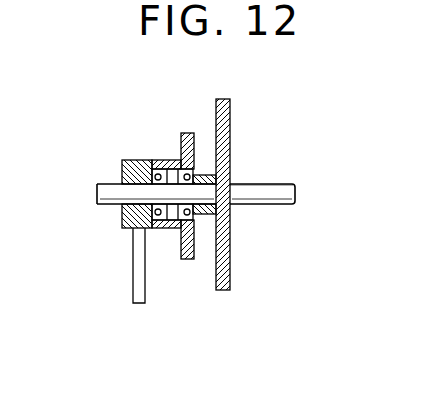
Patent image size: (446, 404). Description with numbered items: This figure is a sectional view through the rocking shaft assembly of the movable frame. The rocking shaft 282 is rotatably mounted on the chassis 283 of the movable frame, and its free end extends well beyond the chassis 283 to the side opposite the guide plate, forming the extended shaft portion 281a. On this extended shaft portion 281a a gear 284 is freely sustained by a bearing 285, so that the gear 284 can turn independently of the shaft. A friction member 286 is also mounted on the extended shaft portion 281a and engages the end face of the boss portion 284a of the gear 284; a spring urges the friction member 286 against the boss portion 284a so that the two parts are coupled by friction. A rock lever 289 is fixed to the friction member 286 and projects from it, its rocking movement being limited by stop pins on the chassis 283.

The extended shaft portion 281a is at (112, 206).
The rocking shaft 282 is at (264, 200).
The chassis 283 is at (228, 136).
The gear 284 is at (181, 136).
The boss portion 284a is at (161, 160).
The bearing 285 is at (165, 214).
The friction member 286 is at (121, 166).
The rock lever 289 is at (133, 280).